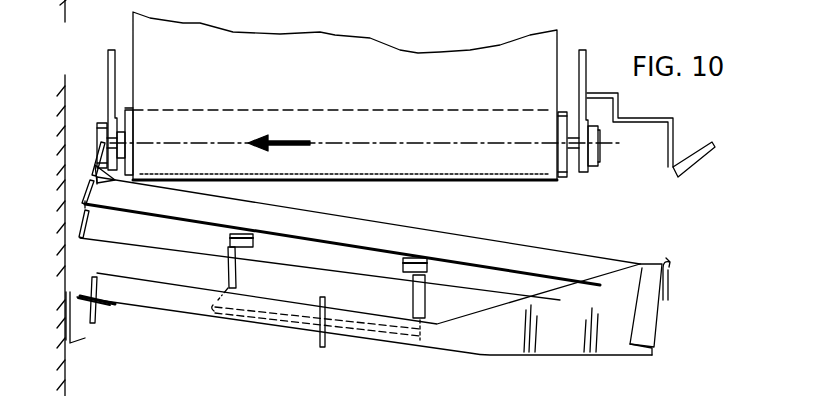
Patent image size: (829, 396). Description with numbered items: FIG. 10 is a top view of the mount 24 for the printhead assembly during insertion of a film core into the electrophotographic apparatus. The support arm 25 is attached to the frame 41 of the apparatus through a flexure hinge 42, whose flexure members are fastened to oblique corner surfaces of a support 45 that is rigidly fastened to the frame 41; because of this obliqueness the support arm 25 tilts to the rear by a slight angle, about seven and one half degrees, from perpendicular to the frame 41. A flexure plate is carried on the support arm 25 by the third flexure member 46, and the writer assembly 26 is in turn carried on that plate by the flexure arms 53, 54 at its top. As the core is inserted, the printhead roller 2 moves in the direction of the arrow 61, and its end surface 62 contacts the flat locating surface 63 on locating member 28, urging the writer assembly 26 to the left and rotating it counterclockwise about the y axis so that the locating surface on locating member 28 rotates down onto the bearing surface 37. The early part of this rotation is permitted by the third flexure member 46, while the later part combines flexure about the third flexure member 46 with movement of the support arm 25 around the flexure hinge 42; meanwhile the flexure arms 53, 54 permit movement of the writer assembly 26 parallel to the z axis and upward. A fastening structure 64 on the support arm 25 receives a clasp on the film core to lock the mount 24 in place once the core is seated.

The printhead roller 2 is at (567, 178).
The mount 24 is at (681, 330).
The support arm 25 is at (607, 345).
The writer assembly 26 is at (410, 233).
The locating member 28 is at (97, 160).
The bearing surface 37 is at (96, 134).
The frame 41 is at (63, 268).
The flexure hinge 42 is at (90, 283).
The support 45 is at (85, 337).
The third flexure member 46 is at (328, 338).
The flexure arm 53 is at (227, 272).
The flexure arm 54 is at (423, 293).
The arrow 61 is at (280, 134).
The end surface 62 is at (101, 123).
The locating surface 63 is at (95, 178).
The fastening structure 64 is at (667, 279).